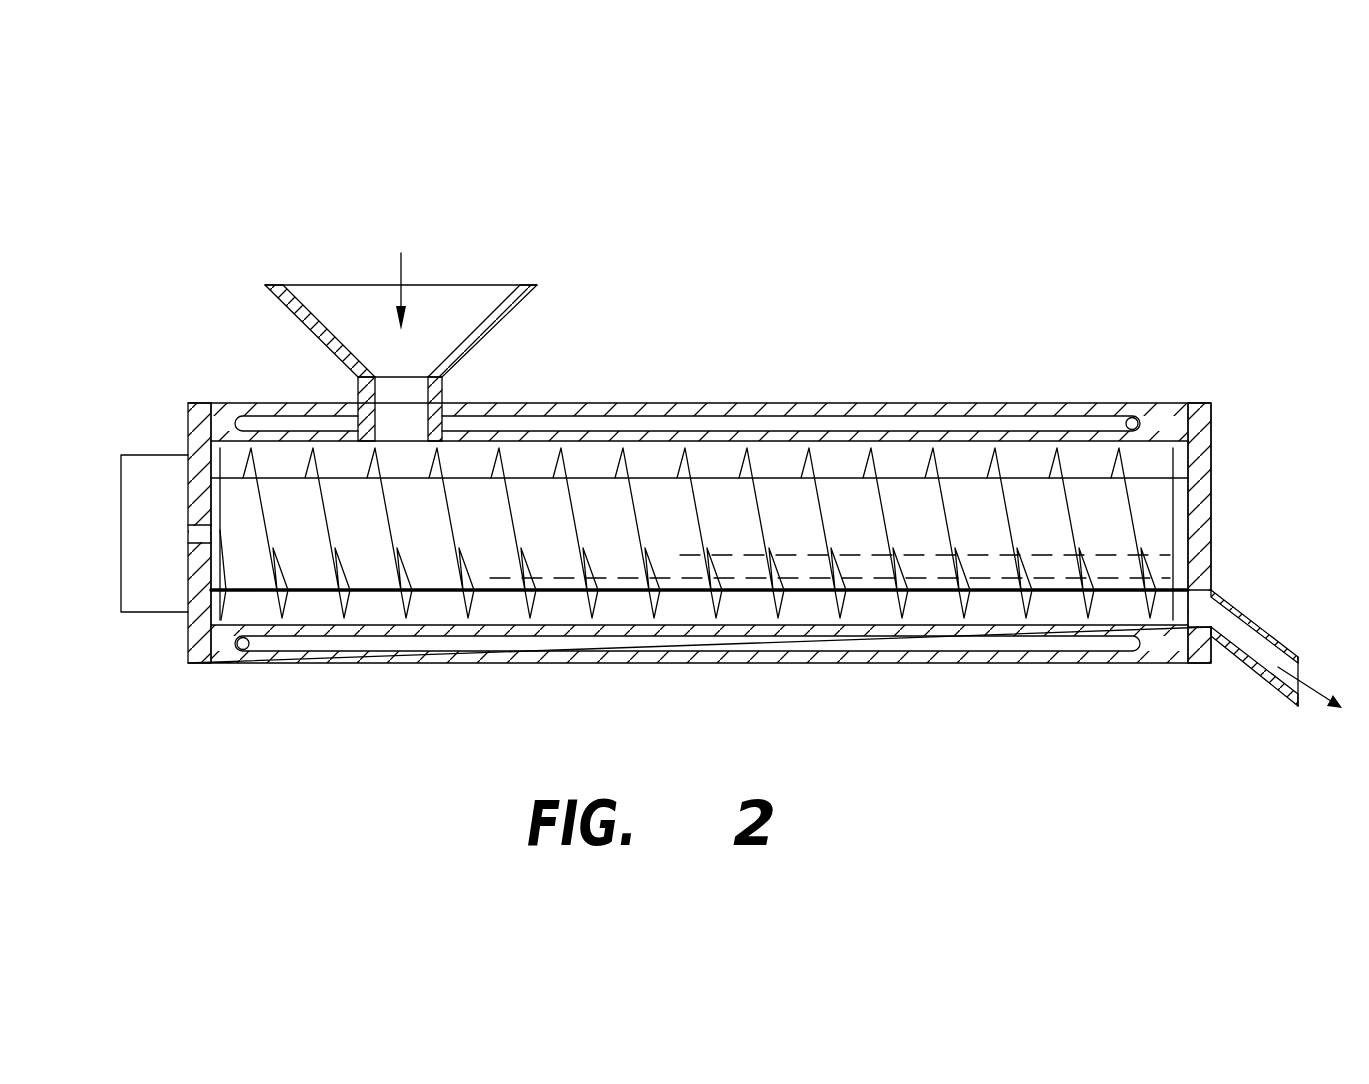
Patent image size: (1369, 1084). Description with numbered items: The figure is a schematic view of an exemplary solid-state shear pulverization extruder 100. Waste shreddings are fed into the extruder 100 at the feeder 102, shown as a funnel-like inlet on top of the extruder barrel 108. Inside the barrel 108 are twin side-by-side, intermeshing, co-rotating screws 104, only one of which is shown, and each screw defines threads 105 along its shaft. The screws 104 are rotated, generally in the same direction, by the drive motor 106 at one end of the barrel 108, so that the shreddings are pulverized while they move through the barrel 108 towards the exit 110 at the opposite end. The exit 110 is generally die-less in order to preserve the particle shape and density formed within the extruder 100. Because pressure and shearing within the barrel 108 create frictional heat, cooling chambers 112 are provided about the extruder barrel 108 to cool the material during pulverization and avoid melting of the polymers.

The SSSP extruder 100 is at (707, 462).
The feeder 102 is at (451, 262).
The screws 104 is at (699, 479).
The threads 105 is at (767, 511).
The drive motor 106 is at (138, 520).
The extruder barrel 108 is at (1040, 402).
The exit 110 is at (1244, 598).
The cooling chambers 112 is at (908, 422).